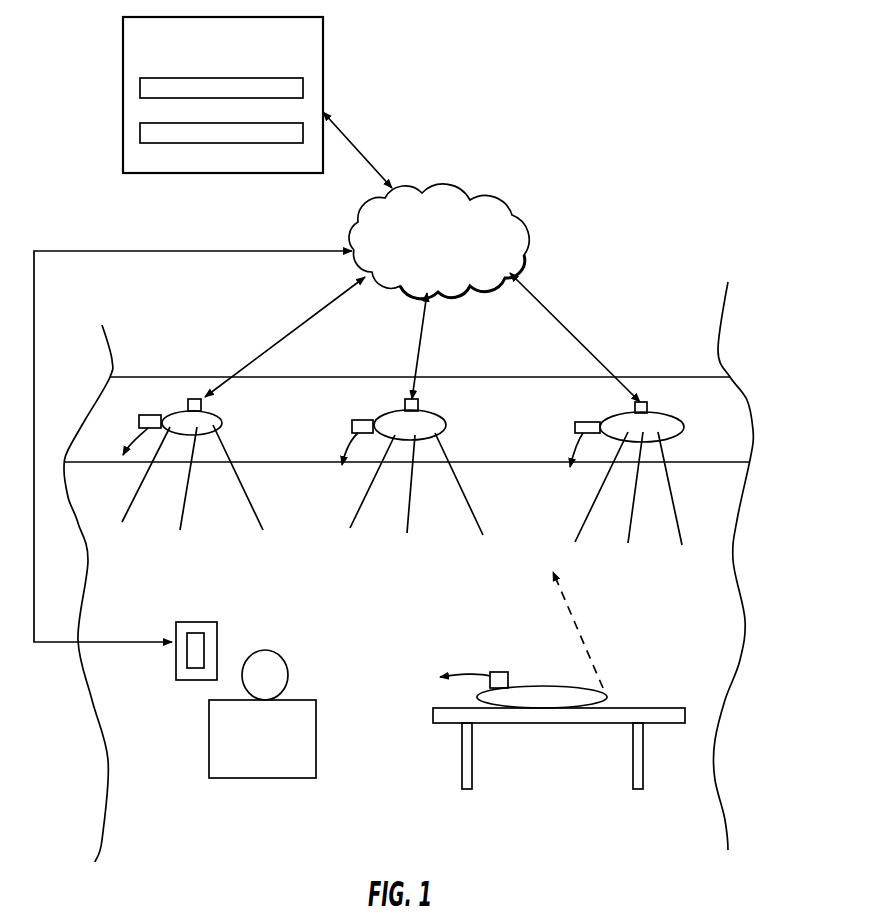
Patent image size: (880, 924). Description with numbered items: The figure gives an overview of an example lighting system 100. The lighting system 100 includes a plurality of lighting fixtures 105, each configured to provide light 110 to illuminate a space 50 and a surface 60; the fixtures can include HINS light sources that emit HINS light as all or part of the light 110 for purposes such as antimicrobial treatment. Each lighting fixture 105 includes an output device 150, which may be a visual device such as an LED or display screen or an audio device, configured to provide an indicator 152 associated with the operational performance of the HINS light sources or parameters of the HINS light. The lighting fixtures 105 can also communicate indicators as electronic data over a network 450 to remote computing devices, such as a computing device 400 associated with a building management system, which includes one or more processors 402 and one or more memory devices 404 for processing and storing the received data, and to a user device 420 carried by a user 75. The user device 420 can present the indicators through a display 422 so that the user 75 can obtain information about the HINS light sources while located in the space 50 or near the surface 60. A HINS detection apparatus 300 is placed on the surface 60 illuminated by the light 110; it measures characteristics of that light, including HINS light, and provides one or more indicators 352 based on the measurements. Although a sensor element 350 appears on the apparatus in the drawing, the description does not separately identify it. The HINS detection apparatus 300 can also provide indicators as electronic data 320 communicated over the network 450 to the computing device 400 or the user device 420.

The lighting system 100 is at (703, 232).
The space 50 is at (715, 628).
The surface 60 is at (673, 715).
The user 75 is at (268, 765).
The lighting fixture 105 is at (219, 415).
The light 110 is at (250, 497).
The output device 150 is at (152, 415).
The indicator 152 is at (347, 464).
The HINS detection apparatus 300 is at (535, 693).
The electronic data 320 is at (577, 628).
The surface sensor 350 is at (497, 672).
The indicator 352 is at (446, 674).
The computing device 400 is at (315, 43).
The processor 402 is at (140, 88).
The memory device 404 is at (140, 130).
The user device 420 is at (202, 627).
The display 422 is at (200, 640).
The network 450 is at (515, 212).